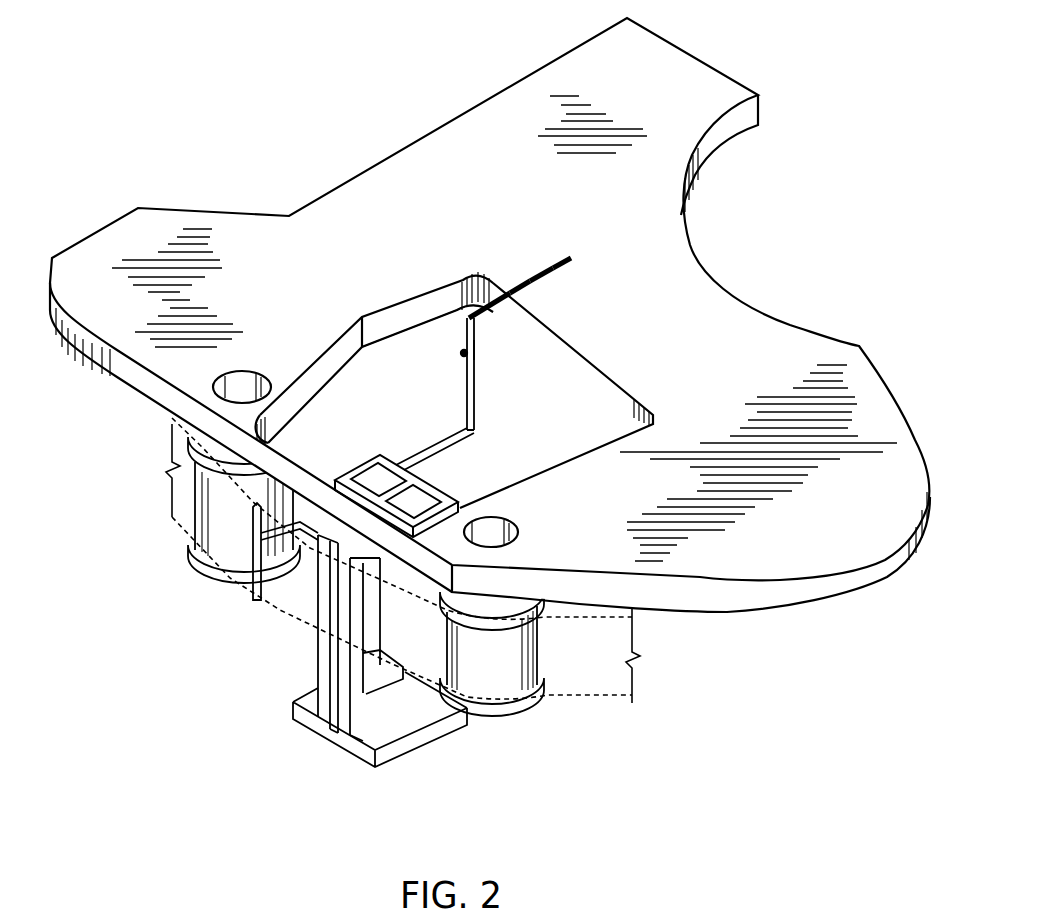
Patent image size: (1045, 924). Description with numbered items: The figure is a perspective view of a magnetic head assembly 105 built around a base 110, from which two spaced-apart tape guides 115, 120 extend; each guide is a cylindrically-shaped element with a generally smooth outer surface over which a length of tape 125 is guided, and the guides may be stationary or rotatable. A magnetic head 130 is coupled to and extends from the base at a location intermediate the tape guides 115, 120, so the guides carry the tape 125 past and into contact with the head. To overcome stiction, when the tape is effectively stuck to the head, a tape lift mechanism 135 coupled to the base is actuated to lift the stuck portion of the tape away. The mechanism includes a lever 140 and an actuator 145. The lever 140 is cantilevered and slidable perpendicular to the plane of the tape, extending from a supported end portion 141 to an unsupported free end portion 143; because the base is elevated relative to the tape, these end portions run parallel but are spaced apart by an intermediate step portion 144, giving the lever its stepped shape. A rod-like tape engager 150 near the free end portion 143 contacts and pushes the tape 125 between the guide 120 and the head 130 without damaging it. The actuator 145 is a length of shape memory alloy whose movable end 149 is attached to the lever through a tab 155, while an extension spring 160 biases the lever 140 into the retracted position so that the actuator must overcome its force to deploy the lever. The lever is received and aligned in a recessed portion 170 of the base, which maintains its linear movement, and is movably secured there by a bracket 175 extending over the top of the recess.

The magnetic head assembly 105 is at (747, 234).
The base 110 is at (784, 329).
The tape guide 115 is at (493, 705).
The tape guide 120 is at (188, 538).
The tape 125 is at (596, 676).
The magnetic head 130 is at (321, 650).
The tape lift mechanism 135 is at (466, 296).
The lever 140 is at (452, 442).
The supported end portion 141 is at (533, 273).
The free end portion 143 is at (273, 505).
The intermediate step portion 144 is at (475, 397).
The actuator 145 is at (450, 333).
The movable end 149 is at (460, 353).
The tape engager 150 is at (250, 588).
The tab 155 is at (478, 350).
The extension spring 160 is at (565, 257).
The recessed portion 170 is at (520, 284).
The bracket 175 is at (510, 291).